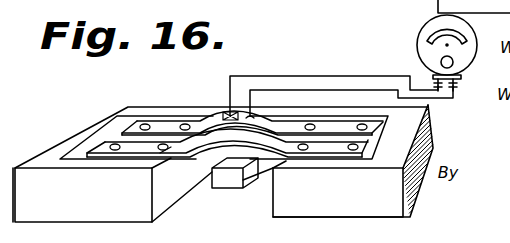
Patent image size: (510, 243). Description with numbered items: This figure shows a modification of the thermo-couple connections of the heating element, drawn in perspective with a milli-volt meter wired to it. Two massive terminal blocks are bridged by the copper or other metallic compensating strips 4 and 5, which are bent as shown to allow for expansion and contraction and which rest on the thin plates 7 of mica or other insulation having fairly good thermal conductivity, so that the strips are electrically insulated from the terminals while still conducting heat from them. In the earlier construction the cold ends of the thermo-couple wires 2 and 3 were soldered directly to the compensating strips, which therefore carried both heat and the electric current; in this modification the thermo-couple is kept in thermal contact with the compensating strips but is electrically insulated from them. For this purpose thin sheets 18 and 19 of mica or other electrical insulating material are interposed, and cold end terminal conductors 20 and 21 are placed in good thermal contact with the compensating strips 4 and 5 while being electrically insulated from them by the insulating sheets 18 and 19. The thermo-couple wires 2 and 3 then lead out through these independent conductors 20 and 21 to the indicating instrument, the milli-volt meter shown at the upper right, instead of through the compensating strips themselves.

The thermo-couple wire 2 is at (237, 152).
The thermo-couple wire 3 is at (254, 118).
The compensating strip 4 is at (200, 126).
The compensating strip 5 is at (163, 155).
The insulating plate 7 is at (110, 135).
The insulating sheet 18 is at (273, 170).
The insulating sheet 19 is at (229, 115).
The cold end terminal conductor 20 is at (217, 148).
The cold end terminal conductor 21 is at (245, 110).